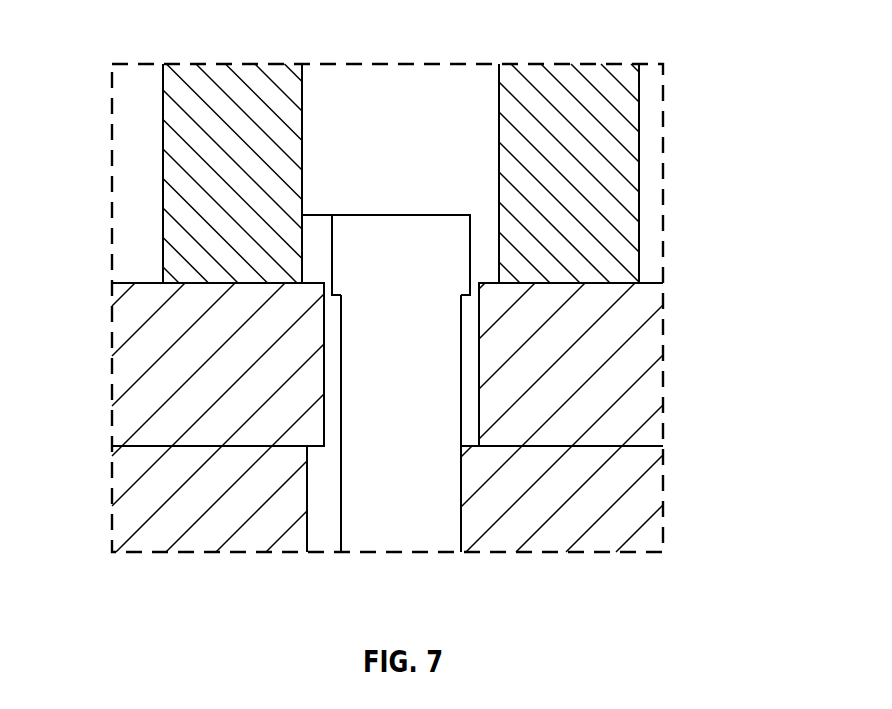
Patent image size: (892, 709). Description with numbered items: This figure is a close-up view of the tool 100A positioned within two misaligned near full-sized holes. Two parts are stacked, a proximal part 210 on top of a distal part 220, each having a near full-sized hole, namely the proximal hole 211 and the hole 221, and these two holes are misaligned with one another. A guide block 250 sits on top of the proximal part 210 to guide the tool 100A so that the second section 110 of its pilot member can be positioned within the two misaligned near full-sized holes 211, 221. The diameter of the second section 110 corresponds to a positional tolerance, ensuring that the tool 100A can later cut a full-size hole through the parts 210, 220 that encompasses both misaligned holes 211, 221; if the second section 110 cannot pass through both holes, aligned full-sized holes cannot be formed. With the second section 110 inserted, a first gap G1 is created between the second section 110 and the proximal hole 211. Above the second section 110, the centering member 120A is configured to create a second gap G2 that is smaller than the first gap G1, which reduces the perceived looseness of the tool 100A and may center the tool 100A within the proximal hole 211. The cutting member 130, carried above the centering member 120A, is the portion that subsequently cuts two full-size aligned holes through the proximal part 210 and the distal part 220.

The tool 100A is at (485, 47).
The guide block 250 is at (625, 172).
The cutting member 130 is at (478, 170).
The centering member 120A is at (490, 262).
The proximal part 210 is at (648, 328).
The proximal near full-sized hole 211 is at (483, 307).
The distal part 220 is at (648, 527).
The near full-sized hole 221 is at (303, 519).
The second section 110 is at (422, 535).
The first gap G1 is at (467, 358).
The second gap G2 is at (327, 292).